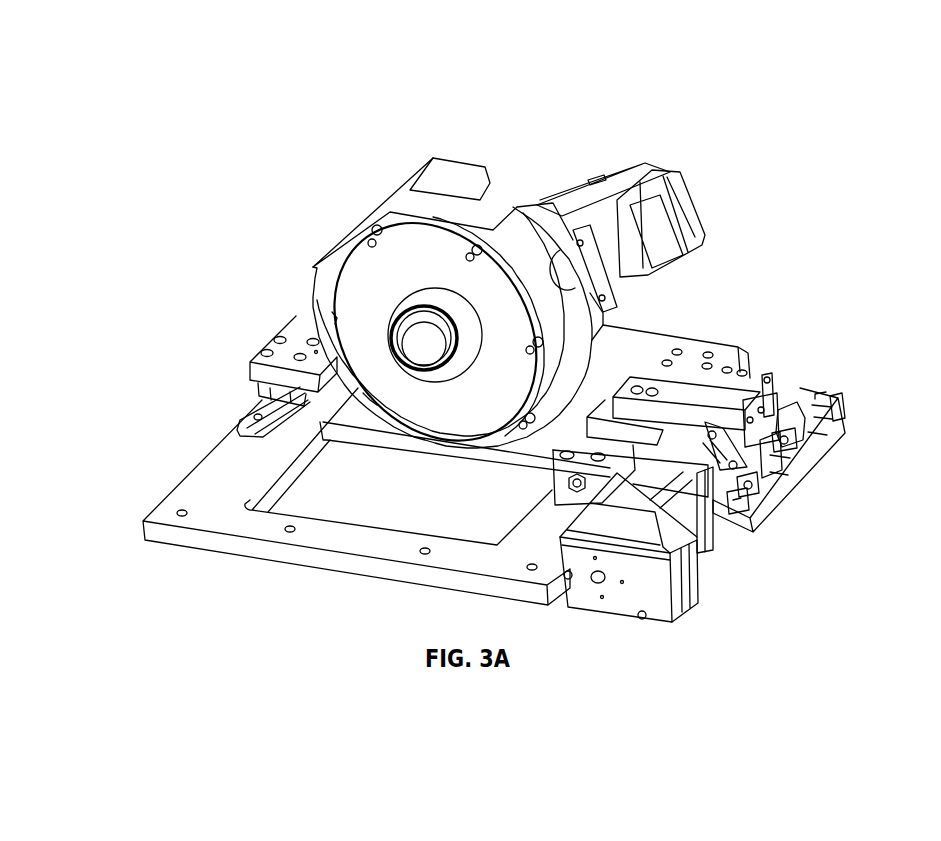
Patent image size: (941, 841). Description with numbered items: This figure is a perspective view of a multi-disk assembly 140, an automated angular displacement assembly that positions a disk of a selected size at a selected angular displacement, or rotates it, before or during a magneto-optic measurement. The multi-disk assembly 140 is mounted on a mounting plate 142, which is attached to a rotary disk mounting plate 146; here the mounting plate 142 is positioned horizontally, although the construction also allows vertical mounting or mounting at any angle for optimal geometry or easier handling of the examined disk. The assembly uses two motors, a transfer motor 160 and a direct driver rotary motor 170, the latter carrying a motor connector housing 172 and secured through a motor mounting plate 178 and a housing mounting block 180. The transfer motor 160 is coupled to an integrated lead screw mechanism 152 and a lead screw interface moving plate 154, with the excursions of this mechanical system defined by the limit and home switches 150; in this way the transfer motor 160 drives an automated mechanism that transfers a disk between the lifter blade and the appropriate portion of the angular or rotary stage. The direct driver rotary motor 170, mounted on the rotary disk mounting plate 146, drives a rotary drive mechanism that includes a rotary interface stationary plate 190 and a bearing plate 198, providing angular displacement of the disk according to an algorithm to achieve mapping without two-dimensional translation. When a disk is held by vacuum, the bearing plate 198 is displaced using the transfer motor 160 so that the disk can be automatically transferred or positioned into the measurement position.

The multi-disk assembly 140 is at (411, 101).
The mounting plate 142 is at (200, 478).
The rotary disk mounting plate 146 is at (292, 330).
The limit and home switches 150 is at (841, 476).
The integrated lead screw mechanism 152 is at (717, 535).
The lead screw interface moving plate 154 is at (737, 400).
The transfer motor 160 is at (702, 619).
The direct driver rotary motor 170 is at (621, 149).
The motor connector housing 172 is at (663, 165).
The motor mounting plate 178 is at (585, 178).
The housing mounting block 180 is at (443, 173).
The rotary interface stationary plate 190 is at (413, 198).
The bearing plate 198 is at (365, 268).